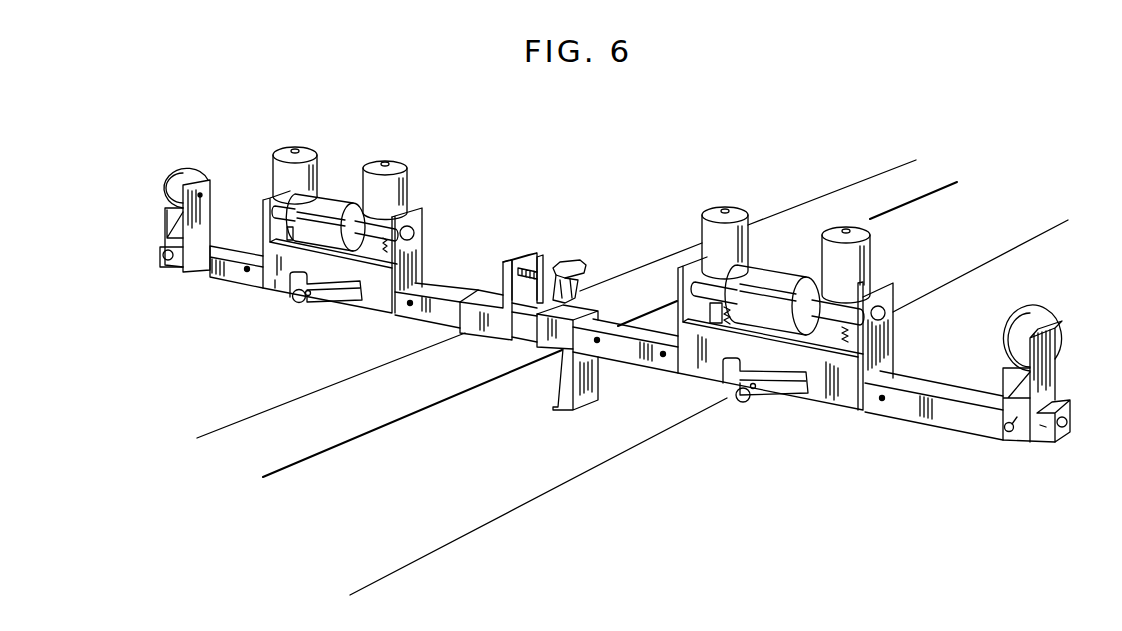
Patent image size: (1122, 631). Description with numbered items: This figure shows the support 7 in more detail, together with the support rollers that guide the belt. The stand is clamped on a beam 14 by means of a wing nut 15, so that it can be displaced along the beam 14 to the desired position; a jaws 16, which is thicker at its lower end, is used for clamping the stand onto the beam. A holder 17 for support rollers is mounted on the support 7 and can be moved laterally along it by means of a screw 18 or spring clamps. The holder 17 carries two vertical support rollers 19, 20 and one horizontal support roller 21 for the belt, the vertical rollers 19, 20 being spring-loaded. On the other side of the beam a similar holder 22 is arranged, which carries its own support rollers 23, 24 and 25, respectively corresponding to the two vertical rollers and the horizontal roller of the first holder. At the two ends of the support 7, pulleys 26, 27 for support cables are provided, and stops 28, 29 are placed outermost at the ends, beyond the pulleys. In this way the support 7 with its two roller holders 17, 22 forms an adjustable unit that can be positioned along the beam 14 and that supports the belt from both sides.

The support 7 is at (955, 415).
The beam 14 is at (513, 493).
The wing nut 15 is at (582, 262).
The jaws 16 is at (590, 395).
The holder 17 is at (830, 405).
The screw 18 is at (757, 397).
The vertical support roller 19 is at (738, 212).
The vertical support roller 20 is at (860, 228).
The horizontal support roller 21 is at (782, 273).
The holder 22 is at (342, 303).
The support roller 23 is at (311, 148).
The support roller 24 is at (397, 170).
The support roller 25 is at (333, 198).
The pulley 26 is at (1042, 315).
The pulley 27 is at (190, 170).
The stop 28 is at (1068, 424).
The stop 29 is at (173, 263).